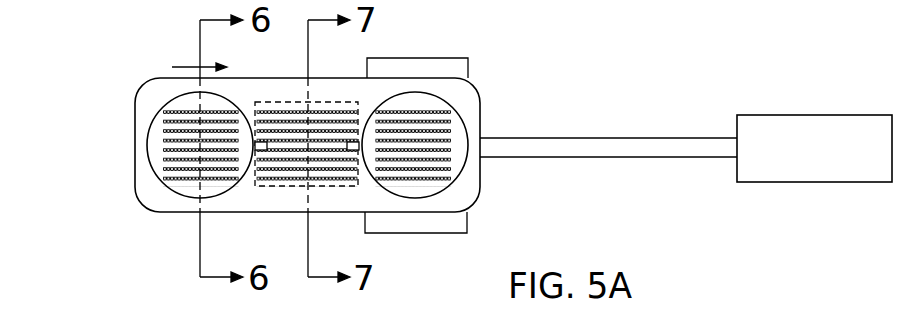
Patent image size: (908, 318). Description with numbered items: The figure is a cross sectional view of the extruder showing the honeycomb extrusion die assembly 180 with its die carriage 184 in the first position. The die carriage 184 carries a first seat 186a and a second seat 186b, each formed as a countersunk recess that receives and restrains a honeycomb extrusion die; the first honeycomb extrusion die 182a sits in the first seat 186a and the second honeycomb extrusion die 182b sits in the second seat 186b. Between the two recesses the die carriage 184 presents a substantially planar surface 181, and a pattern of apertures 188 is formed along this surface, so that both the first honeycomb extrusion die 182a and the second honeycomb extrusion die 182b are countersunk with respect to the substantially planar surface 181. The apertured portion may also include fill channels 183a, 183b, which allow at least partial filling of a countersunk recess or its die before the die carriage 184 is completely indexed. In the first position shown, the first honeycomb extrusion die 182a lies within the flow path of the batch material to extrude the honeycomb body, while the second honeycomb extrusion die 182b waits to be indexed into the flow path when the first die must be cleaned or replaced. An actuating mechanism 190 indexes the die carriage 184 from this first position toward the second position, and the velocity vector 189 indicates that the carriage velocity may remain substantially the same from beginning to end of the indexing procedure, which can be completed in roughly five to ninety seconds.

The honeycomb extrusion die assembly 180 is at (486, 86).
The substantially planar surface 181 is at (263, 90).
The first honeycomb extrusion die 182a is at (480, 125).
The second honeycomb extrusion die 182b is at (180, 197).
The first fill channel 183a is at (355, 149).
The second fill channel 183b is at (260, 150).
The die carriage 184 is at (480, 188).
The first seat 186a is at (423, 96).
The second seat 186b is at (150, 150).
The pattern of apertures 188 is at (329, 90).
The velocity vector 189 is at (180, 67).
The actuating mechanism 190 is at (815, 114).